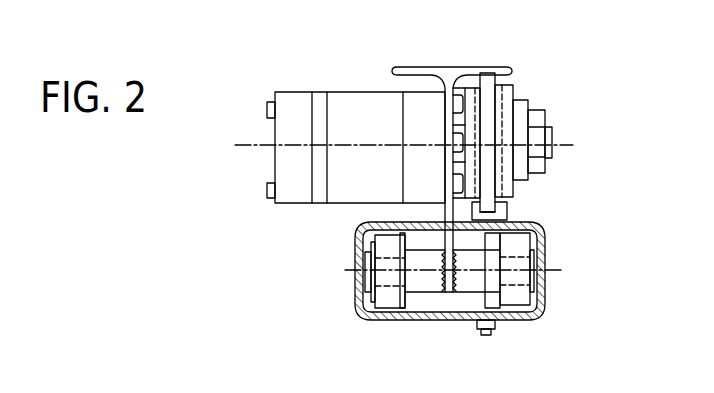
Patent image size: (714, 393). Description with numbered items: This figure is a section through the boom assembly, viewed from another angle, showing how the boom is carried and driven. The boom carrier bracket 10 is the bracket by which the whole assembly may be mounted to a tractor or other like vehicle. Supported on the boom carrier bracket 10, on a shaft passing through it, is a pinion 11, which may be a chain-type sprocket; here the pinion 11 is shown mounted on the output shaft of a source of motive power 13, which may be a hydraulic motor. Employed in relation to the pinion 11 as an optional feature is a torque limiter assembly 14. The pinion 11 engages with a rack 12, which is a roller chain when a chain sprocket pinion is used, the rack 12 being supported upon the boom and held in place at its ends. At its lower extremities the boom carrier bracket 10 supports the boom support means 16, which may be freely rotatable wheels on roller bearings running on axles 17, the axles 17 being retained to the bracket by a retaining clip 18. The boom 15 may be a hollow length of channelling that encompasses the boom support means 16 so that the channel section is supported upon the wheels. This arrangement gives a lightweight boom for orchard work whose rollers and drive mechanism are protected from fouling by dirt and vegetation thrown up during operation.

The boom carrier bracket 10 is at (417, 65).
The pinion 11 is at (502, 78).
The rack 12 is at (507, 206).
The source of motive power 13 is at (282, 102).
The torque limiter assembly 14 is at (527, 98).
The boom 15 is at (440, 320).
The boom support means 16 is at (393, 306).
The axles 17 is at (362, 276).
The retaining clip 18 is at (372, 248).